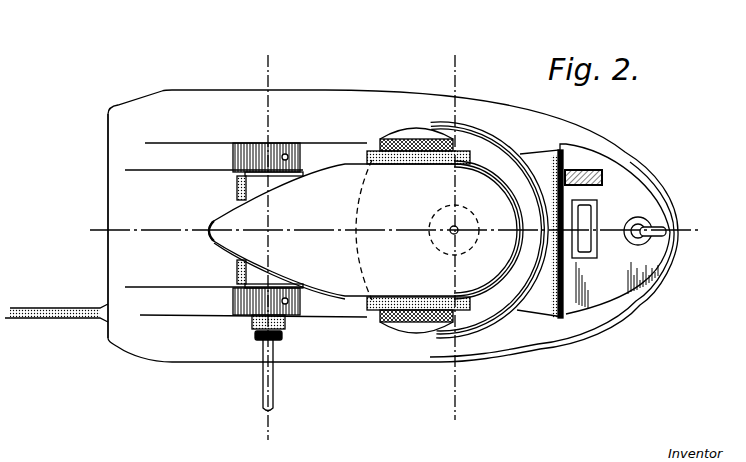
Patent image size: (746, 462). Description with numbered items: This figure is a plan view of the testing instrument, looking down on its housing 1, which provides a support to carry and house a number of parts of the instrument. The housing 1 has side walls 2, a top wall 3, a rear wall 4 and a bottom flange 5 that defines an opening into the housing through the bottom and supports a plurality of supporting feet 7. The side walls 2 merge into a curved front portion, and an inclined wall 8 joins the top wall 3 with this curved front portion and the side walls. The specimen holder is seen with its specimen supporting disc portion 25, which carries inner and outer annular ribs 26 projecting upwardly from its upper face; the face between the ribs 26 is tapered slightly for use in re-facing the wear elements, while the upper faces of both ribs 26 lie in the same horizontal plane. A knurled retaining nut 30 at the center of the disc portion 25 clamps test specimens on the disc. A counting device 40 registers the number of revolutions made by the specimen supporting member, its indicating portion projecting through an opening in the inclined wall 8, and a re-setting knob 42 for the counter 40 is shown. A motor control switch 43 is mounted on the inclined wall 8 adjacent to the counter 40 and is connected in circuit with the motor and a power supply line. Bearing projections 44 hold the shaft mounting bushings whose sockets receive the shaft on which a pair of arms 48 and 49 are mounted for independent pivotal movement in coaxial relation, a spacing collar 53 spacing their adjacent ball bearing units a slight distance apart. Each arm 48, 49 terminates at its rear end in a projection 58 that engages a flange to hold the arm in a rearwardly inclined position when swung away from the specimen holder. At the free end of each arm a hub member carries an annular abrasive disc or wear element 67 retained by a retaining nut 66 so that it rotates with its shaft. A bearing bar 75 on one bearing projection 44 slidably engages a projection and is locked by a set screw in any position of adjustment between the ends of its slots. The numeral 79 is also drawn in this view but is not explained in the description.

The housing 1 is at (647, 162).
The side walls 2 is at (316, 91).
The top wall 3 is at (78, 218).
The rear wall 4 is at (108, 168).
The bottom flange 5 is at (465, 60).
The supporting feet 7 is at (278, 62).
The inclined wall 8 is at (640, 272).
The specimen supporting disc portion 25 is at (482, 141).
The annular ribs 26 is at (525, 172).
The knurled retaining nut 30 is at (436, 251).
The counting device 40 is at (593, 243).
The re-setting knob 42 is at (591, 172).
The motor control switch 43 is at (641, 243).
The bearing projections 44 is at (213, 150).
The arm 48 is at (483, 277).
The arm 49 is at (483, 183).
The spacing collar 53 is at (270, 231).
The projection 58 is at (212, 228).
The retaining nut 66 is at (397, 139).
The abrasive disc 67 is at (372, 153).
The bearing bar 75 is at (286, 322).
The rod 79 is at (275, 383).